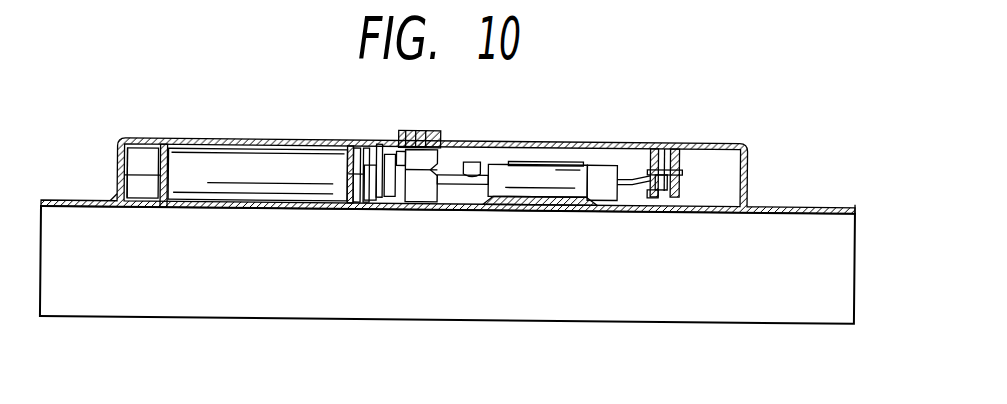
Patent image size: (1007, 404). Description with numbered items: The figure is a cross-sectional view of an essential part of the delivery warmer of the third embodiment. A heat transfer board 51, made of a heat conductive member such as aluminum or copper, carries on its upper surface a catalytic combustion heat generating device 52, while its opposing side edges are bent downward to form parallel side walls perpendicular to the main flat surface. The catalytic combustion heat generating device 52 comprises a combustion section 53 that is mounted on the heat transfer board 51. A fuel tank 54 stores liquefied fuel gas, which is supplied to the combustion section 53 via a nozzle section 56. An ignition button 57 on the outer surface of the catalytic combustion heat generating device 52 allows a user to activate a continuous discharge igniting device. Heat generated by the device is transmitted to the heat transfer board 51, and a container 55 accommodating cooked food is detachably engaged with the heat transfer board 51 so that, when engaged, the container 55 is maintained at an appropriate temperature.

The heat transfer board 51 is at (817, 213).
The catalytic combustion heat generating device 52 is at (487, 155).
The combustion section 53 is at (543, 178).
The fuel tank 54 is at (277, 169).
The container 55 is at (606, 300).
The nozzle section 56 is at (436, 165).
The ignition button 57 is at (669, 150).